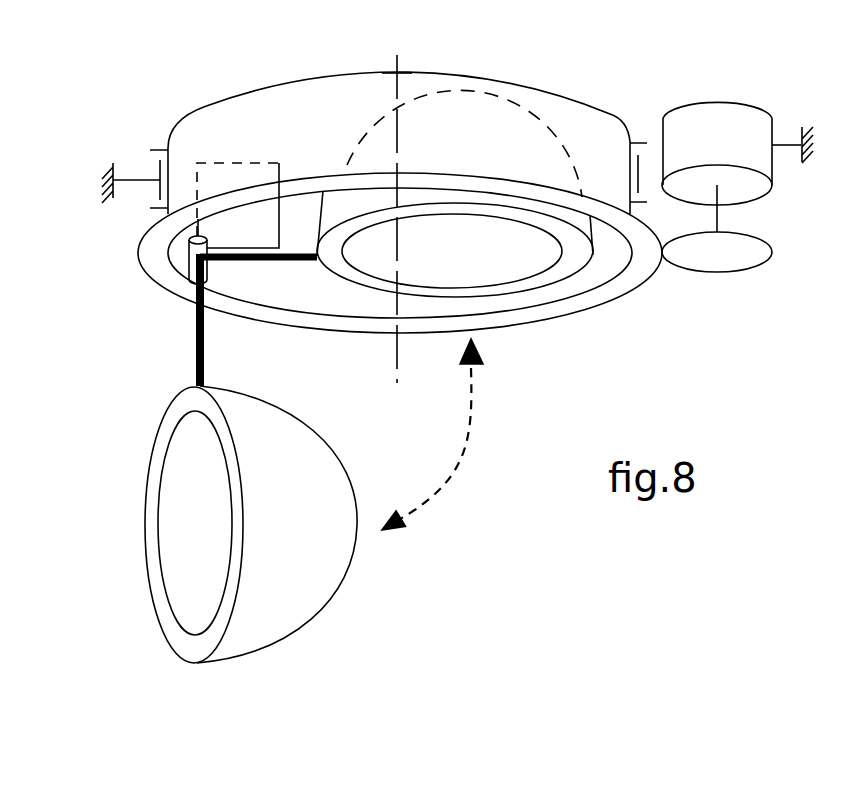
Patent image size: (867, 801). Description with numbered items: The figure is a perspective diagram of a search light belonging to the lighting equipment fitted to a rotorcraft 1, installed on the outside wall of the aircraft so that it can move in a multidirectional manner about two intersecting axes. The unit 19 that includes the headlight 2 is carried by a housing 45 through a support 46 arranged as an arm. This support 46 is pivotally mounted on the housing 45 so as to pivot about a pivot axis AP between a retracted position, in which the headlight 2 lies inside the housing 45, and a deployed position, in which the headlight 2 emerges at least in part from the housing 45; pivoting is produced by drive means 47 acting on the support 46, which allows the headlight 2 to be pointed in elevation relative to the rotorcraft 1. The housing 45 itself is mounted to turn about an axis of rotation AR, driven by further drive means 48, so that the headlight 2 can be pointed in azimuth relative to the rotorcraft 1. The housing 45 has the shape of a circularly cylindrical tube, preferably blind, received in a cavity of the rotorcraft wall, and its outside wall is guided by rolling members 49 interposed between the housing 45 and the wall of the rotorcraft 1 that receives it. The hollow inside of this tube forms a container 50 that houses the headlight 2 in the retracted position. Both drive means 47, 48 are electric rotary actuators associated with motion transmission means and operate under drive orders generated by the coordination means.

The rotorcraft 1 is at (96, 184).
The headlight 2 is at (369, 596).
The unit 19 is at (307, 540).
The housing 45 is at (233, 98).
The support 46 is at (197, 350).
The drive means 47 is at (241, 163).
The drive means 48 is at (720, 100).
The rolling members 49 is at (146, 178).
The container 50 is at (317, 288).
The pivot axis AP is at (188, 253).
The axis of rotation AR is at (396, 207).